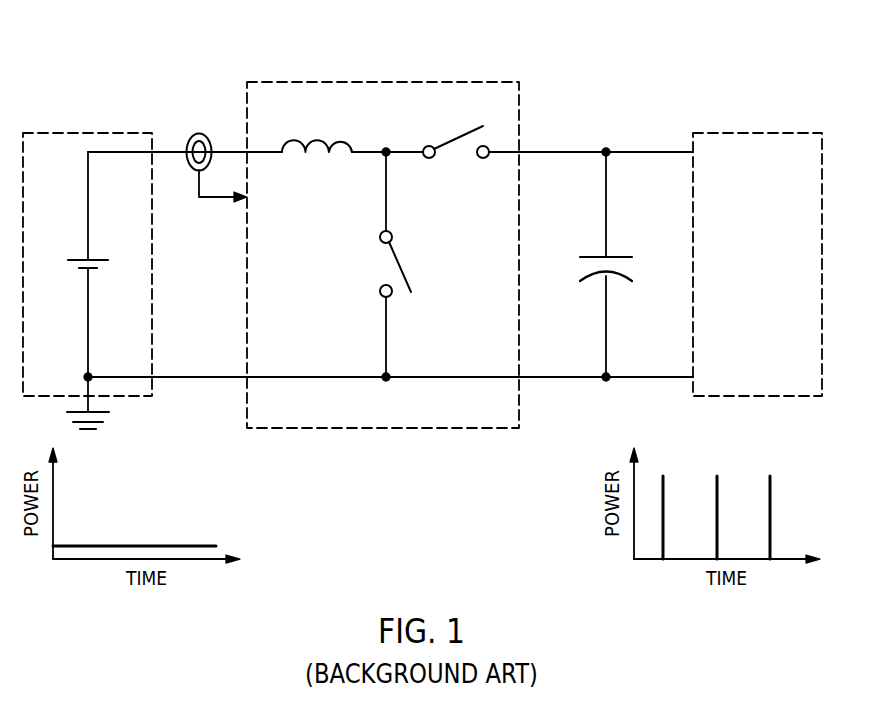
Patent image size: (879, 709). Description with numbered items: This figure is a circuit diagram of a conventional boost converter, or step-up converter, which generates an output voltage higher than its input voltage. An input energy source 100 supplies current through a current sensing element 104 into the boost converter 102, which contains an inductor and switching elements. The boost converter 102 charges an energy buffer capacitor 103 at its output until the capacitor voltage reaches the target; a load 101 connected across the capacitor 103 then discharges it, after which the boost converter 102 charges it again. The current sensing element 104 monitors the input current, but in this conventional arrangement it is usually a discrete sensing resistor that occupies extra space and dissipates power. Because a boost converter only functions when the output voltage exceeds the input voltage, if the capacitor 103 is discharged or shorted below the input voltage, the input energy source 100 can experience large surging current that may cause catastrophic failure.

The input energy source 100 is at (87, 133).
The load 101 is at (757, 133).
The boost converter 102 is at (383, 82).
The energy buffer capacitor 103 is at (620, 255).
The current sensing element 104 is at (193, 134).